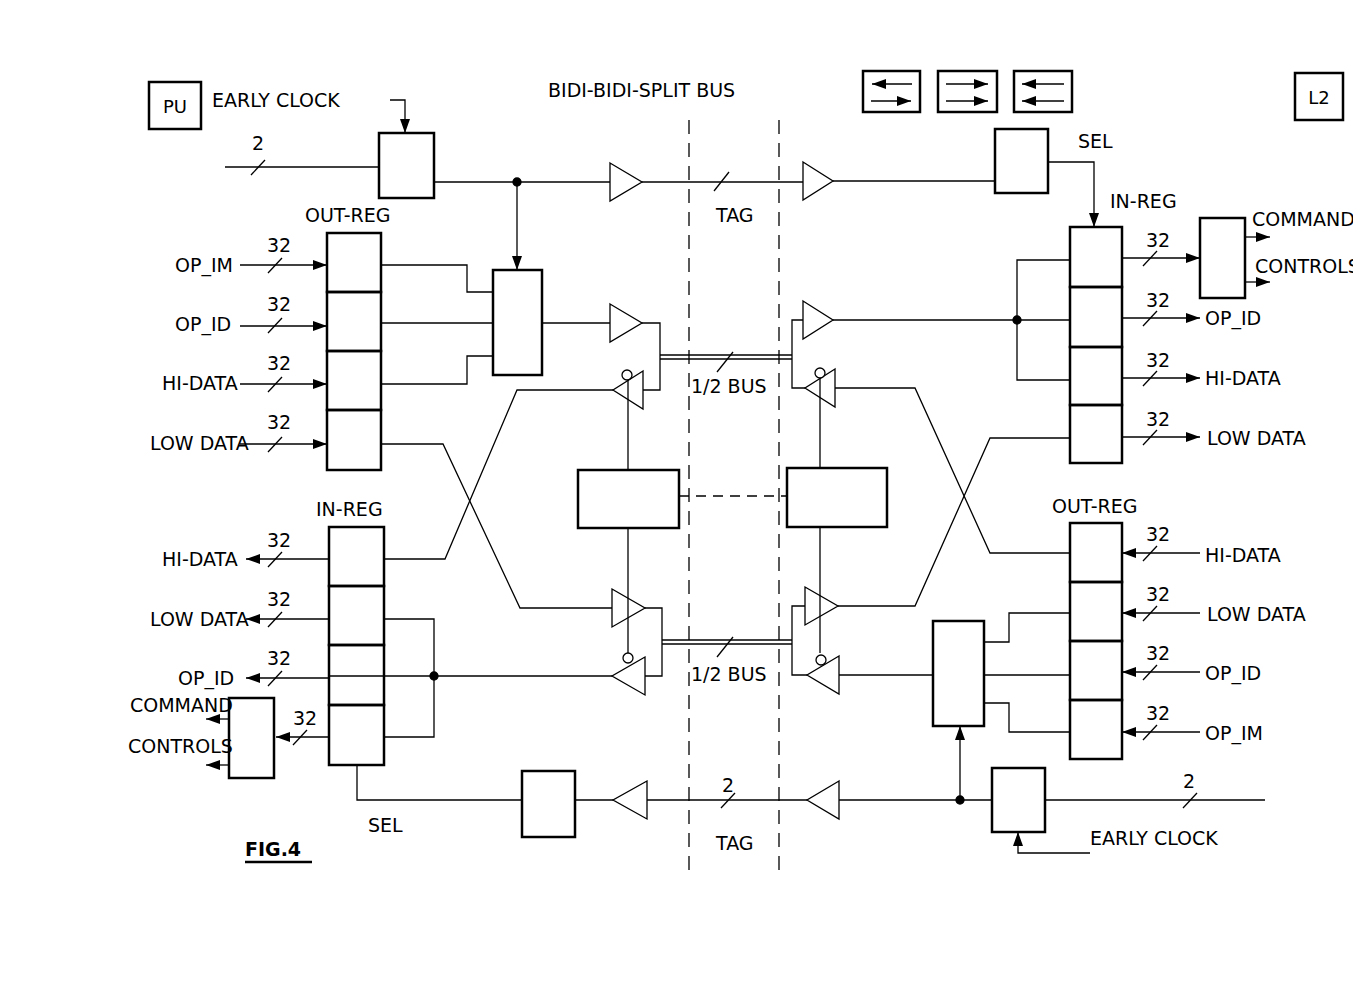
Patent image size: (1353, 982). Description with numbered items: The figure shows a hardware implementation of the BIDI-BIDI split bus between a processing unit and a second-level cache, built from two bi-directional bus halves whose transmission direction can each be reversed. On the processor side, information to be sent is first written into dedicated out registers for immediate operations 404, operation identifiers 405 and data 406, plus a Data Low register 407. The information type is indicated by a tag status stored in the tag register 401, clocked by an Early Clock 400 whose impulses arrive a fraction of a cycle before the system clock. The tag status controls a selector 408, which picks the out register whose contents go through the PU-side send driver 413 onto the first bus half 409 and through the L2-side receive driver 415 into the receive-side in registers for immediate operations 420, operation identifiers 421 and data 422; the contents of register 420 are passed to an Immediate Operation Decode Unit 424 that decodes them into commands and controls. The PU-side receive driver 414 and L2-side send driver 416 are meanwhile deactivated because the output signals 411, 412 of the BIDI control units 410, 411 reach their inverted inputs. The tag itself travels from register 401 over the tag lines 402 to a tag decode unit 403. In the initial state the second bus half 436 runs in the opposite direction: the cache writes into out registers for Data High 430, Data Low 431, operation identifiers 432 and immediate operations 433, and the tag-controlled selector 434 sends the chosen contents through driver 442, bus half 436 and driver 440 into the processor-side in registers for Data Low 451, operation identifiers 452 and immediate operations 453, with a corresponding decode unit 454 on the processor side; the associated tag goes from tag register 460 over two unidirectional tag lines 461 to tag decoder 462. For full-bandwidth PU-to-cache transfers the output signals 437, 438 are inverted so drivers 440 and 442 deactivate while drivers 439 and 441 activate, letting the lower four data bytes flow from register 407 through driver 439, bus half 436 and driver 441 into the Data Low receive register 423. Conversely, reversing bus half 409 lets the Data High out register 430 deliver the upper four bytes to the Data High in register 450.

The early clock input 400 is at (376, 110).
The tag register 401 is at (434, 162).
The tag lines 402 is at (700, 178).
The tag decode unit 403 is at (995, 160).
The out register for Immediate Operation 404 is at (383, 260).
The out register for Operation Identifiers 405 is at (383, 319).
The out register for Data 406 is at (383, 378).
The Data Low register 407 is at (383, 437).
The selector 408 is at (542, 290).
The first bus half 409 is at (704, 355).
The PU-side BIDI control unit 410 is at (612, 470).
The L2-side BIDI control unit 411 is at (843, 468).
The output signal of BIDI control unit 412 is at (821, 356).
The PU-side send driver 413 is at (622, 318).
The PU-side receive driver 414 is at (625, 400).
The L2-side receive driver 415 is at (828, 318).
The L2-side send driver 416 is at (826, 408).
The in register for Immediate Operations 420 is at (1070, 246).
The in register for Operation Identifiers 421 is at (1070, 306).
The in register for Data 422 is at (1070, 364).
The Data Low receive register 423 is at (1070, 424).
The Immediate Operation Decode Unit 424 is at (1222, 218).
The Data High out register 430 is at (1070, 546).
The Data Low out register 431 is at (1070, 632).
The out register for Operation Identifiers 432 is at (1070, 690).
The out register for Immediate Operations 433 is at (1086, 760).
The tag-controlled selector 434 is at (958, 621).
The second bus half 436 is at (708, 640).
The output signal of BIDI control unit 437 is at (822, 618).
The output signal of BIDI control unit 438 is at (628, 652).
The driver 439 is at (615, 600).
The driver 440 is at (628, 688).
The driver 441 is at (830, 604).
The driver 442 is at (826, 694).
The Data High in register 450 is at (384, 553).
The in register for Data Low 451 is at (384, 611).
The in register for Operation Identifiers 452 is at (386, 667).
The in register for Immediate Operations 453 is at (386, 756).
The OP IM decoder (PU) 454 is at (252, 778).
The tag register 460 is at (992, 830).
The unidirectional tag lines 461 is at (794, 800).
The tag decoder 462 is at (560, 771).